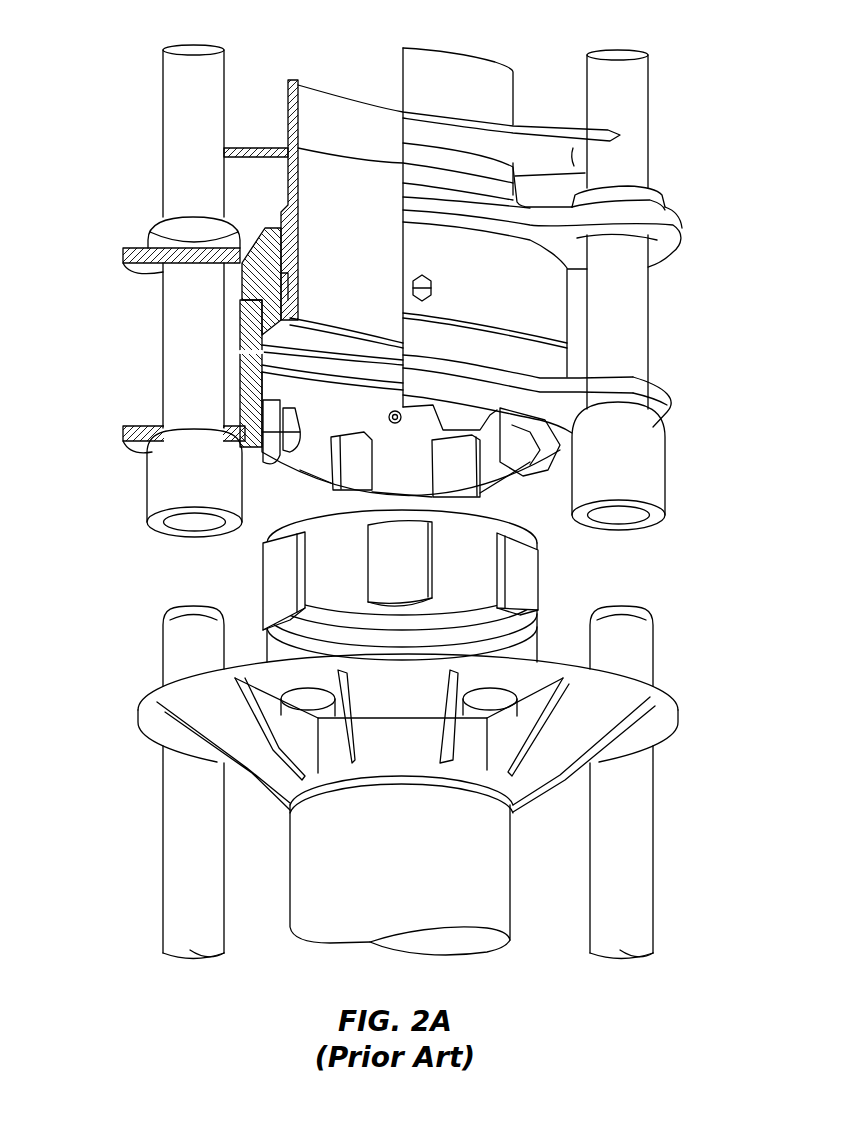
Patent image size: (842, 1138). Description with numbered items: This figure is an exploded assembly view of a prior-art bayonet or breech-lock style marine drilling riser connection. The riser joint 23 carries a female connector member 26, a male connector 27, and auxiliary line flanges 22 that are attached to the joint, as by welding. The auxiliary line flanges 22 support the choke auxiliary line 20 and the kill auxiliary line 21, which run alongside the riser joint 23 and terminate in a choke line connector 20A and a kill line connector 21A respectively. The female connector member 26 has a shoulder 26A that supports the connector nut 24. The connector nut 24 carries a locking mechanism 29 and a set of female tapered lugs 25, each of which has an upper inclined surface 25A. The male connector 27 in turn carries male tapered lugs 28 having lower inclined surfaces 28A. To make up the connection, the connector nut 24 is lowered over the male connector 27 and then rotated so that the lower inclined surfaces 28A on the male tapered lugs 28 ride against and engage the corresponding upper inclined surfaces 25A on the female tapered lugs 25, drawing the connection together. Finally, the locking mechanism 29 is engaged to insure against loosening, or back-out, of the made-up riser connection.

The choke auxiliary line 20 is at (650, 92).
The choke line connector 20A is at (672, 472).
The kill auxiliary line 21 is at (175, 118).
The kill line connector 21A is at (160, 487).
The auxiliary line flanges 22 is at (576, 158).
The riser joint 23 is at (472, 50).
The connector nut 24 is at (247, 327).
The female tapered lugs 25 is at (343, 474).
The upper inclined surfaces 25A is at (372, 437).
The female connector member 26 is at (334, 233).
The shoulder 26A is at (285, 293).
The male connector 27 is at (452, 563).
The male tapered lugs 28 is at (275, 568).
The lower inclined surfaces 28A is at (265, 628).
The locking mechanism 29 is at (437, 288).